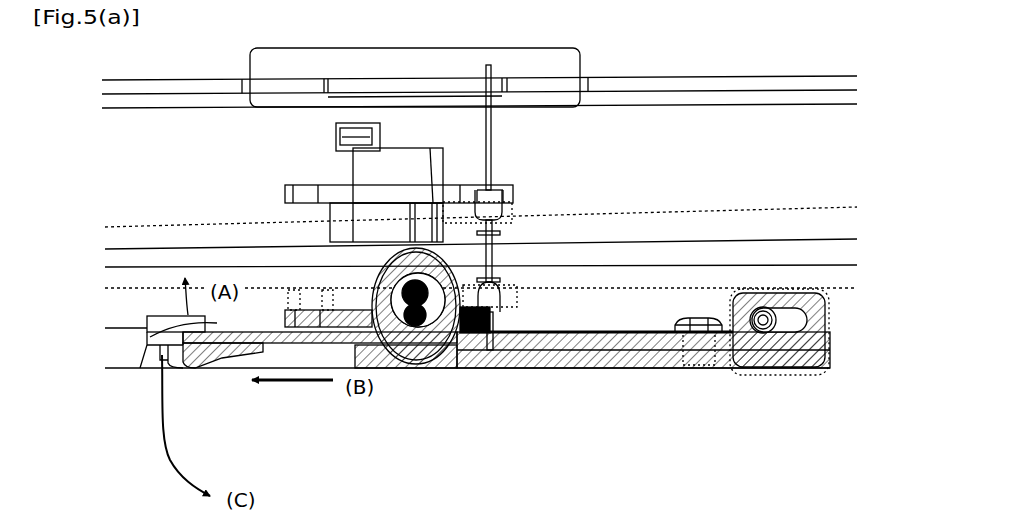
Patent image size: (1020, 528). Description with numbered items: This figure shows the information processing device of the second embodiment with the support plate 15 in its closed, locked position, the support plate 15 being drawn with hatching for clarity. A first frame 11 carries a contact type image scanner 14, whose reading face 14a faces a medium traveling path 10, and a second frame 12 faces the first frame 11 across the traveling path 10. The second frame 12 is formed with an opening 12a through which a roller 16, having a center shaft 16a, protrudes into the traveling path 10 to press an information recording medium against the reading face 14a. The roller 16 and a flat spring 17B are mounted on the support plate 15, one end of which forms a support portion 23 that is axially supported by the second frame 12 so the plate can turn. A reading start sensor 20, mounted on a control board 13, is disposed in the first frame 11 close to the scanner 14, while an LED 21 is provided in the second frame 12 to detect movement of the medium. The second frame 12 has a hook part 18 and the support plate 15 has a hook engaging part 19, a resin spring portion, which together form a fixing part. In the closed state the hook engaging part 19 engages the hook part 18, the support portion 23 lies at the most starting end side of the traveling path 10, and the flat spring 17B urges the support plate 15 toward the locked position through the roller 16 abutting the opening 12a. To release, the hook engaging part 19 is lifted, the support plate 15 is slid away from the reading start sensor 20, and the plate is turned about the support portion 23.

The medium traveling path 10 is at (112, 257).
The first frame 11 is at (117, 238).
The second frame 12 is at (118, 277).
The opening 12a is at (375, 266).
The control board 13 is at (615, 86).
The contact type image scanner 14 is at (397, 172).
The reading face 14a is at (432, 205).
The support plate 15 is at (628, 370).
The roller 16 is at (407, 262).
The center shaft 16a is at (443, 267).
The flat spring 17B is at (430, 318).
The hook part 18 is at (147, 345).
The hook engaging part 19 is at (197, 353).
The reading start sensor 20 is at (500, 235).
The LED 21 is at (495, 300).
The support portion 23 is at (762, 375).